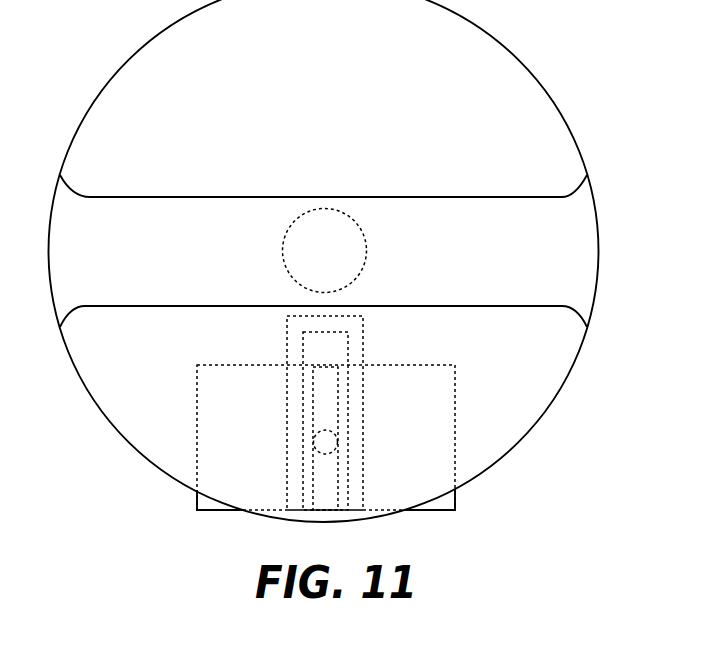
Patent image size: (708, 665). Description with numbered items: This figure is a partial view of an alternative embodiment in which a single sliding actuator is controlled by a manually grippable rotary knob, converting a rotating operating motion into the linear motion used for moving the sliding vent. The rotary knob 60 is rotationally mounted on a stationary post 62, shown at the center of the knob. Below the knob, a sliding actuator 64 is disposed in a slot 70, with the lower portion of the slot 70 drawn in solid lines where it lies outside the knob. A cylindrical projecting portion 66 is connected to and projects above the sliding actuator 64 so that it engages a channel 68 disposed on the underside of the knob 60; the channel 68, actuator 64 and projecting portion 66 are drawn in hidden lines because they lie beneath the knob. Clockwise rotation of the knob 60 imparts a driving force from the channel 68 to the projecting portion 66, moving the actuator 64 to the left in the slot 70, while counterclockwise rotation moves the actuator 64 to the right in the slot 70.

The rotary knob 60 is at (586, 237).
The stationary post 62 is at (332, 232).
The sliding actuator 64 is at (323, 390).
The cylindrical projecting portion 66 is at (356, 448).
The channel 68 is at (363, 342).
The slot 70 is at (455, 503).